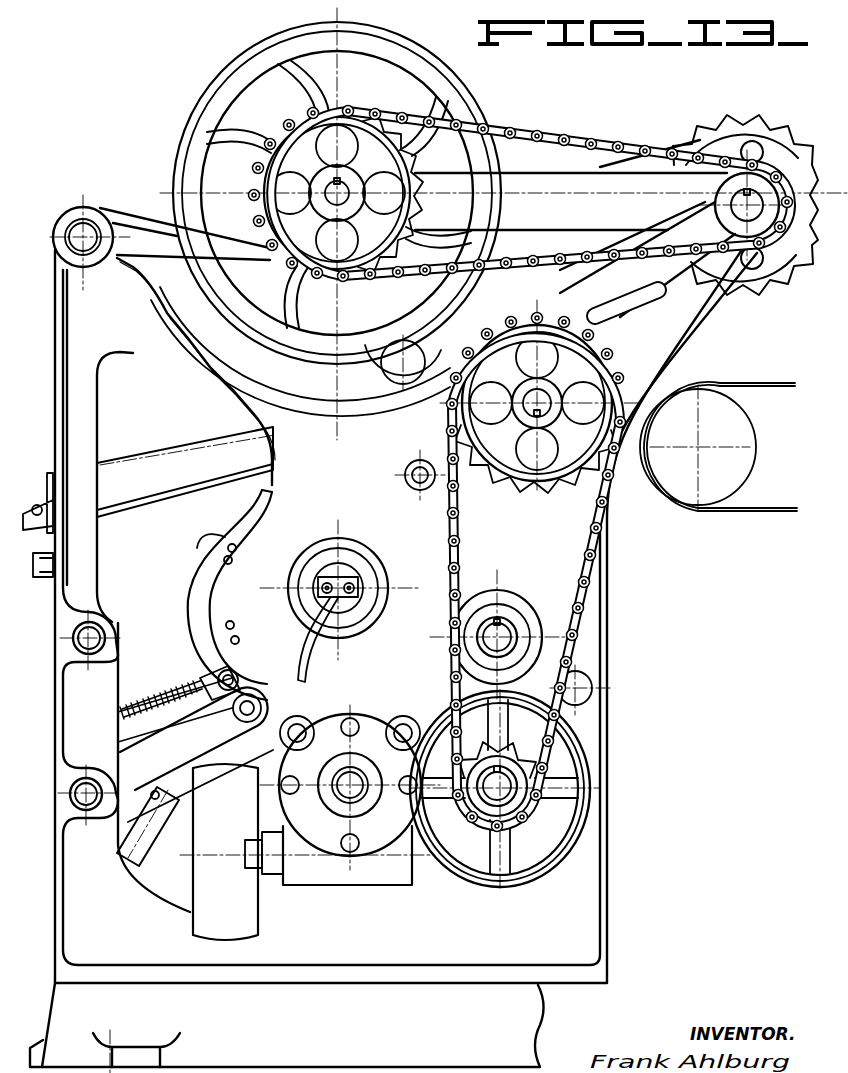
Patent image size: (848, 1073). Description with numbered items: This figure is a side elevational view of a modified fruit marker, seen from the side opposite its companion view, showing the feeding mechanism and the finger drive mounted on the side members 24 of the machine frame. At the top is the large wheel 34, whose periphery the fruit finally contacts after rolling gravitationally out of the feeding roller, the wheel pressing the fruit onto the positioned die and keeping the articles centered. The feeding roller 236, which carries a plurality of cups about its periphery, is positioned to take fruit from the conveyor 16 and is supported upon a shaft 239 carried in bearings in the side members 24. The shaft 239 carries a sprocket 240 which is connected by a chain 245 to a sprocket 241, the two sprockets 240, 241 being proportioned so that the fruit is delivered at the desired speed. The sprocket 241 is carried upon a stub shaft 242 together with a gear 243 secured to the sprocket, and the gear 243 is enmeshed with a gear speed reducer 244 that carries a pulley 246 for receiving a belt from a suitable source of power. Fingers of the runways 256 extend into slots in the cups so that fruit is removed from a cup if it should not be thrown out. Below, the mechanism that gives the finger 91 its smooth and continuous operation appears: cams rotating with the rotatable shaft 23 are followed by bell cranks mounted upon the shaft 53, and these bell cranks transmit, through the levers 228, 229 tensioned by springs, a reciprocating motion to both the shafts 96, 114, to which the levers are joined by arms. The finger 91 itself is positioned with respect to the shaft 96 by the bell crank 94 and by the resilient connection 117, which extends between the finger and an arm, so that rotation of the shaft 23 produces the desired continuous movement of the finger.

The wheel 34 is at (182, 163).
The roller 236 is at (520, 322).
The shaft 239 is at (533, 407).
The sprocket 240 is at (482, 435).
The conveyor 16 is at (744, 505).
The chain 245 is at (594, 548).
The side members 24 is at (607, 596).
The rotatable shaft 23 is at (512, 624).
The shaft 53 is at (580, 684).
The gear 243 is at (555, 745).
The sprocket 241 is at (512, 757).
The stub shaft 242 is at (505, 785).
The gear speed reducer 244 is at (362, 862).
The pulley 246 is at (248, 928).
The runways 256 is at (190, 505).
The shaft 114 is at (100, 630).
The finger 91 is at (193, 598).
The lever 228 is at (134, 684).
The resilient connection 117 is at (206, 685).
The shaft 96 is at (96, 776).
The lever 229 is at (233, 760).
The bell crank 94 is at (185, 758).